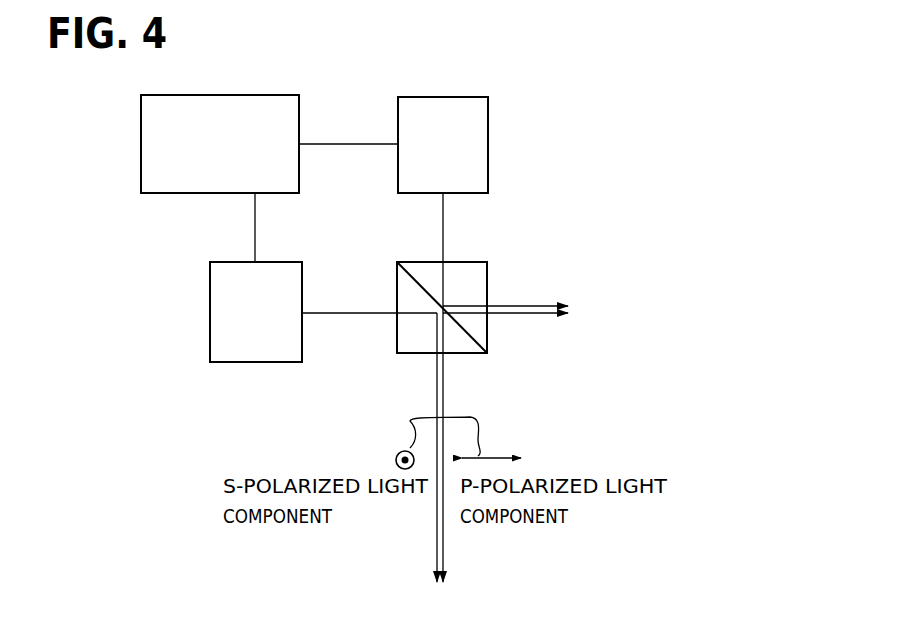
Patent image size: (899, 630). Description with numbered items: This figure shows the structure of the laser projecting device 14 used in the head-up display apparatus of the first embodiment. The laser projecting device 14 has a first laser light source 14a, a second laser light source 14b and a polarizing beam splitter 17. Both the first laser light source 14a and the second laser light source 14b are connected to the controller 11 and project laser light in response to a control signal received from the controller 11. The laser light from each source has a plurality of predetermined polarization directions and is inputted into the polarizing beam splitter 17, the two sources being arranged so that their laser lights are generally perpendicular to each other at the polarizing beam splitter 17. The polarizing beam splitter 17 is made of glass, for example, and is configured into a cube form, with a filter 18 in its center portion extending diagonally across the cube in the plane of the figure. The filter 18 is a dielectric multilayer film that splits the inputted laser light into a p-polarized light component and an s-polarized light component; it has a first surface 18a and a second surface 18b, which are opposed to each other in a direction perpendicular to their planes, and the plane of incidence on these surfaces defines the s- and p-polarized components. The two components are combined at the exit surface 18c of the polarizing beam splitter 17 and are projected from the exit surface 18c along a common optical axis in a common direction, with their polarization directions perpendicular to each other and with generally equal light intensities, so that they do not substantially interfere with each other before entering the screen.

The controller 11 is at (210, 97).
The laser projecting device 14 is at (602, 196).
The first laser light source 14a is at (210, 315).
The second laser light source 14b is at (488, 130).
The polarizing beam splitter 17 is at (487, 268).
The filter 18 is at (478, 344).
The first surface 18a is at (410, 279).
The second surface 18b is at (413, 280).
The exit surface 18c is at (408, 353).